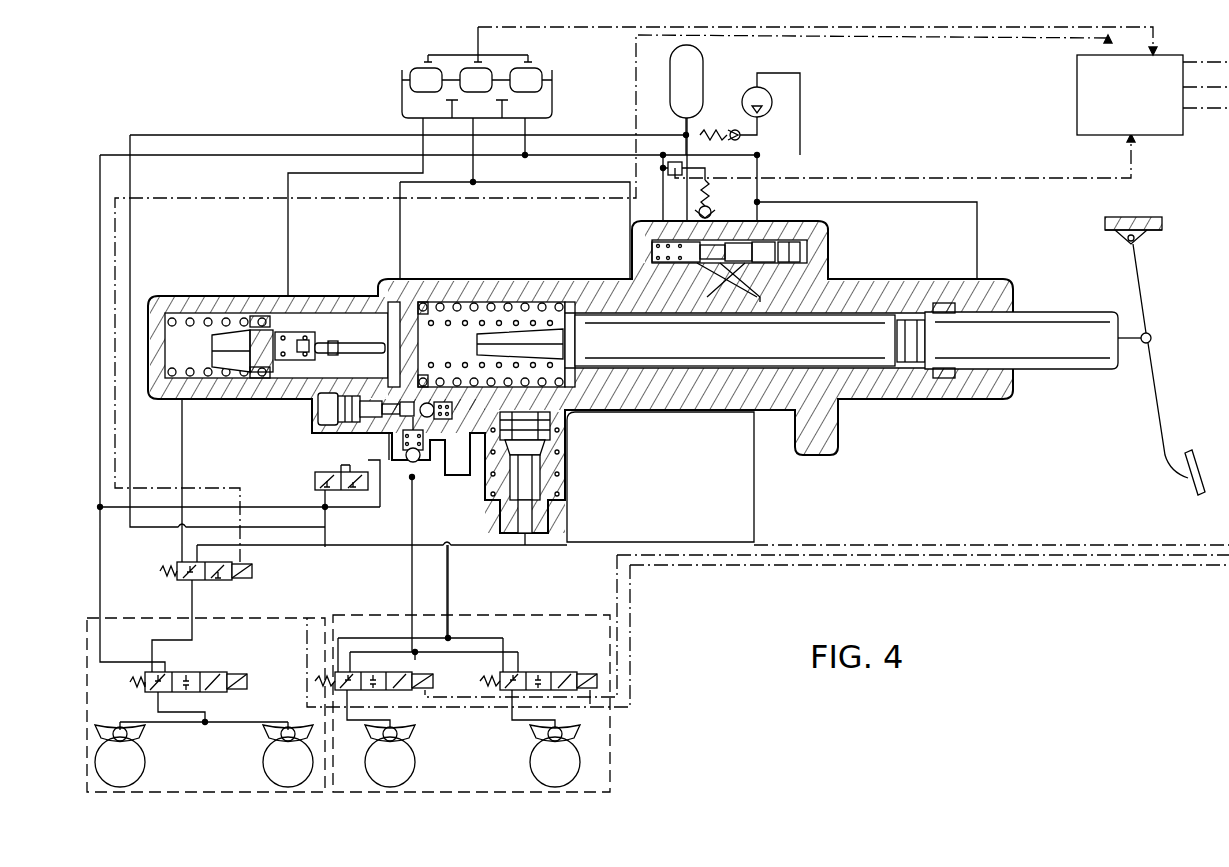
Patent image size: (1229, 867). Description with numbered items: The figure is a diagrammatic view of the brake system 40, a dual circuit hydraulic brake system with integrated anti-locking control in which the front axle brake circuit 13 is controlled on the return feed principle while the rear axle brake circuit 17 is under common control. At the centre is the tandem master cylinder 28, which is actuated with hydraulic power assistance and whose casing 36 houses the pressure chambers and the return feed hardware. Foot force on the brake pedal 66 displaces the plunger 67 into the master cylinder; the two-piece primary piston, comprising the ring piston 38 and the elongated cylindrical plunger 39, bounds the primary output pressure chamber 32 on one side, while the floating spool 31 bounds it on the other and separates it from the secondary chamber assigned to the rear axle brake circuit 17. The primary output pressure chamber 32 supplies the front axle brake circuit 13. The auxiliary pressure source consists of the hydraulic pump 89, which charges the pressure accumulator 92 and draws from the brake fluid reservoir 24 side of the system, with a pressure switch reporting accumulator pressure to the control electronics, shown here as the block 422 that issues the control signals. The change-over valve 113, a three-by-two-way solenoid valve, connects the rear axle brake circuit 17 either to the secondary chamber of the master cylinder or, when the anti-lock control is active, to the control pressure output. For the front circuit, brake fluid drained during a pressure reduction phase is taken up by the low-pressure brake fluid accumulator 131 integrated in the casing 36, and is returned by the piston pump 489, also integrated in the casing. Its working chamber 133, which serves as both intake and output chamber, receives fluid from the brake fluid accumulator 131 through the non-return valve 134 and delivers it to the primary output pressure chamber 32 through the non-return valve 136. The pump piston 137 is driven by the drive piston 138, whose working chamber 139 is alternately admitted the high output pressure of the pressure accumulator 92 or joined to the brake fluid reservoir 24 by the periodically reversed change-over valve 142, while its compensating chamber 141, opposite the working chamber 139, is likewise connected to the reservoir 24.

The front axle brake circuit 13 is at (598, 738).
The rear axle brake circuit 17 is at (134, 617).
The brake fluid reservoir 24 is at (550, 104).
The tandem master cylinder 28 is at (664, 414).
The floating spool 31 is at (330, 322).
The primary output pressure chamber 32 is at (452, 330).
The casing 36 is at (352, 297).
The ring piston 38 is at (662, 388).
The plunger 39 is at (866, 322).
The brake system 40 is at (835, 440).
The brake pedal 66 is at (1160, 418).
The plunger 67 is at (1070, 326).
The hydraulic pump 89 is at (763, 100).
The pressure accumulator 92 is at (699, 88).
The change-over valve 113 is at (212, 581).
The brake fluid accumulator 131 is at (570, 493).
The working chamber 133 is at (421, 371).
The non-return valve 134 is at (413, 478).
The non-return valve 136 is at (432, 418).
The pump piston 137 is at (383, 437).
The drive piston 138 is at (355, 430).
The working chamber 139 is at (312, 401).
The compensating chamber 141 is at (362, 428).
The change-over valve 142 is at (357, 492).
The electronic control unit 422 is at (1082, 97).
The piston pump 489 is at (310, 424).